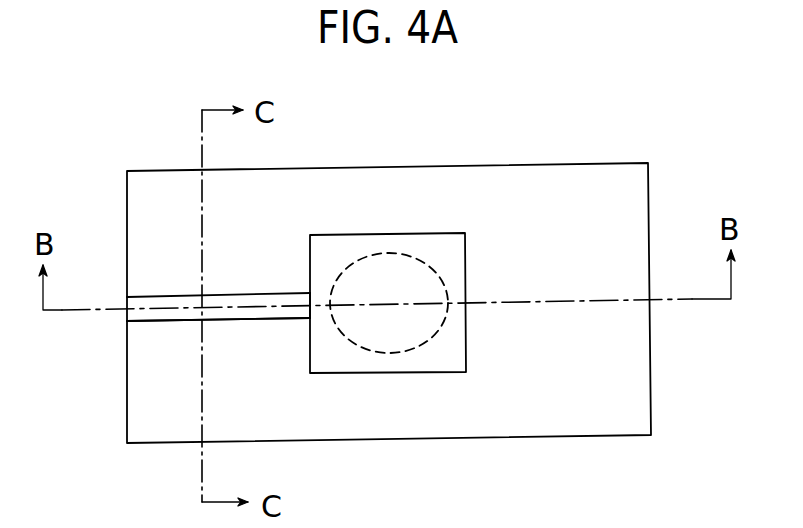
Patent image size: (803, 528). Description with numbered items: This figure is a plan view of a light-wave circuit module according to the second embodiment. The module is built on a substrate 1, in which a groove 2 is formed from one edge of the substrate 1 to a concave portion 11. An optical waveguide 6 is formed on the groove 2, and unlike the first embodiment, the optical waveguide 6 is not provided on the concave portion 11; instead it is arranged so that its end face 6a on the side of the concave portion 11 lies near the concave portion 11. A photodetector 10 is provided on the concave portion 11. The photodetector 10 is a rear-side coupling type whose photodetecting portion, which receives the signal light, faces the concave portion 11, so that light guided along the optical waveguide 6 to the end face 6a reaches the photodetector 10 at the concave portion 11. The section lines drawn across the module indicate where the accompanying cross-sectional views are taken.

The substrate 1 is at (623, 212).
The groove 2 is at (148, 322).
The optical waveguide 6 is at (252, 295).
The end face 6a is at (328, 303).
The photodetector 10 is at (422, 235).
The concave portion 11 is at (437, 273).